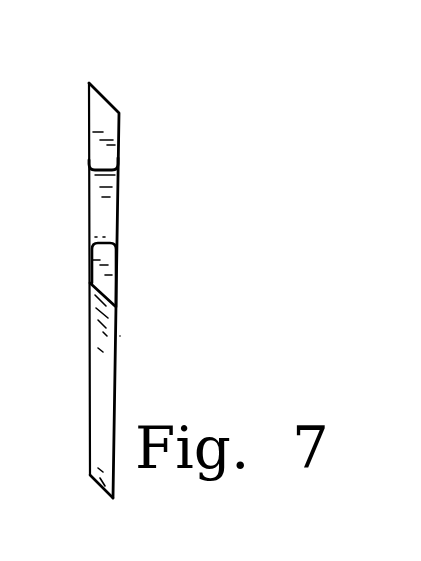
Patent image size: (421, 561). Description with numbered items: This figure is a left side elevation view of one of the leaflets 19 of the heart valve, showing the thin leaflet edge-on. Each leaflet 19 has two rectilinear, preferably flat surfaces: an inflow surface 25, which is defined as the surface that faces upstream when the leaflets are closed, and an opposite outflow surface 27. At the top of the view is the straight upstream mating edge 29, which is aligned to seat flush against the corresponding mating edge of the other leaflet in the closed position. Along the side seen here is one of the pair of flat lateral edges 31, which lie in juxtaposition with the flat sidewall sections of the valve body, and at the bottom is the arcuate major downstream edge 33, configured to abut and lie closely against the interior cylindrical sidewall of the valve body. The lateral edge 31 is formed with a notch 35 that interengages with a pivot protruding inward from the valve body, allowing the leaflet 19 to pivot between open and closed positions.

The leaflet 19 is at (173, 91).
The inflow surface 25 is at (89, 353).
The outflow surface 27 is at (115, 392).
The upstream mating edge 29 is at (102, 93).
The lateral edge 31 is at (103, 276).
The arcuate major downstream edge 33 is at (103, 488).
The notch 35 is at (102, 212).